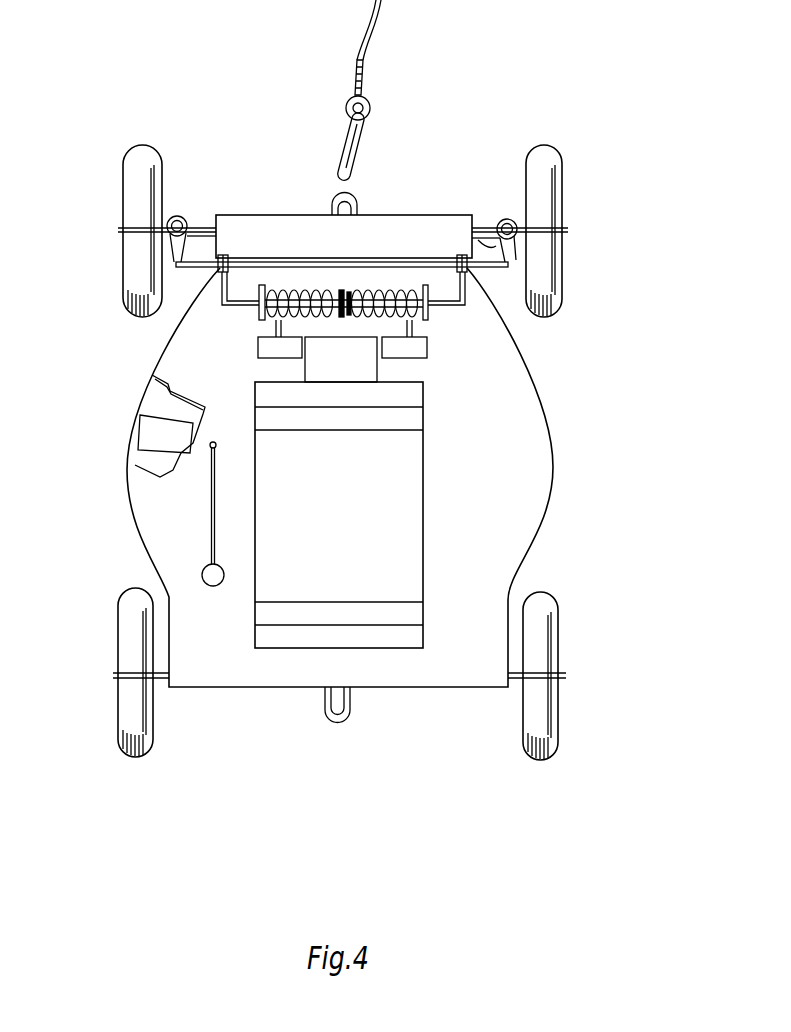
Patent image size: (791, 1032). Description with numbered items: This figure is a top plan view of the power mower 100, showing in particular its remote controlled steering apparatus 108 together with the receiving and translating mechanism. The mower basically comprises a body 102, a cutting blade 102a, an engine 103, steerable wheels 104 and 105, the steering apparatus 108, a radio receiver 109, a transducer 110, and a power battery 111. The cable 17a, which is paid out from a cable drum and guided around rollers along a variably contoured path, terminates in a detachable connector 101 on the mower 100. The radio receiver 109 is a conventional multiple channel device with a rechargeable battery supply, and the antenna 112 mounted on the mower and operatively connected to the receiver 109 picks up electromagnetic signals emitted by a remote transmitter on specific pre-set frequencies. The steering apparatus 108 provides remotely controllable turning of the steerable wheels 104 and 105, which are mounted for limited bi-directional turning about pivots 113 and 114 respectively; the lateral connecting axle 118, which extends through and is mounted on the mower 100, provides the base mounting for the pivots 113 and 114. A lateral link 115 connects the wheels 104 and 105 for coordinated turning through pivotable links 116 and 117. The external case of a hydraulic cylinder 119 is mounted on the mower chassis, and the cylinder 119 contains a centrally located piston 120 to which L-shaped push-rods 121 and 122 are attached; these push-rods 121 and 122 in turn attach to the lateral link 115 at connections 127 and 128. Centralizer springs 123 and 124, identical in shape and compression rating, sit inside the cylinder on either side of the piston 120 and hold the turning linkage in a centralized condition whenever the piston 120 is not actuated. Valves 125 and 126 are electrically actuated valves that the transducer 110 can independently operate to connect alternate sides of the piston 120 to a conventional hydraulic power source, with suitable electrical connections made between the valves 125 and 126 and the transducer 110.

The cable 17a is at (372, 18).
The power mower 100 is at (556, 446).
The detachable connector 101 is at (351, 196).
The body 102 is at (464, 497).
The cutting blade 102a is at (165, 411).
The engine 103 is at (322, 527).
The steerable wheel 104 is at (149, 146).
The steerable wheel 105 is at (560, 146).
The steering apparatus 108 is at (298, 259).
The radio receiver 109 is at (323, 647).
The transducer 110 is at (323, 624).
The power battery 111 is at (326, 405).
The antenna 112 is at (210, 510).
The pivot 113 is at (178, 214).
The pivot 114 is at (506, 219).
The lateral link 115 is at (377, 270).
The pivotable link 116 is at (200, 237).
The pivotable link 117 is at (495, 245).
The lateral connecting axle 118 is at (478, 250).
The hydraulic cylinder 119 is at (428, 338).
The piston 120 is at (342, 317).
The L-shaped push-rod 121 is at (227, 307).
The L-shaped push-rod 122 is at (458, 305).
The centralizer spring 123 is at (300, 292).
The centralizer spring 124 is at (380, 314).
The valve 125 is at (258, 352).
The valve 126 is at (427, 386).
The connection 127 is at (228, 262).
The connection 128 is at (453, 258).